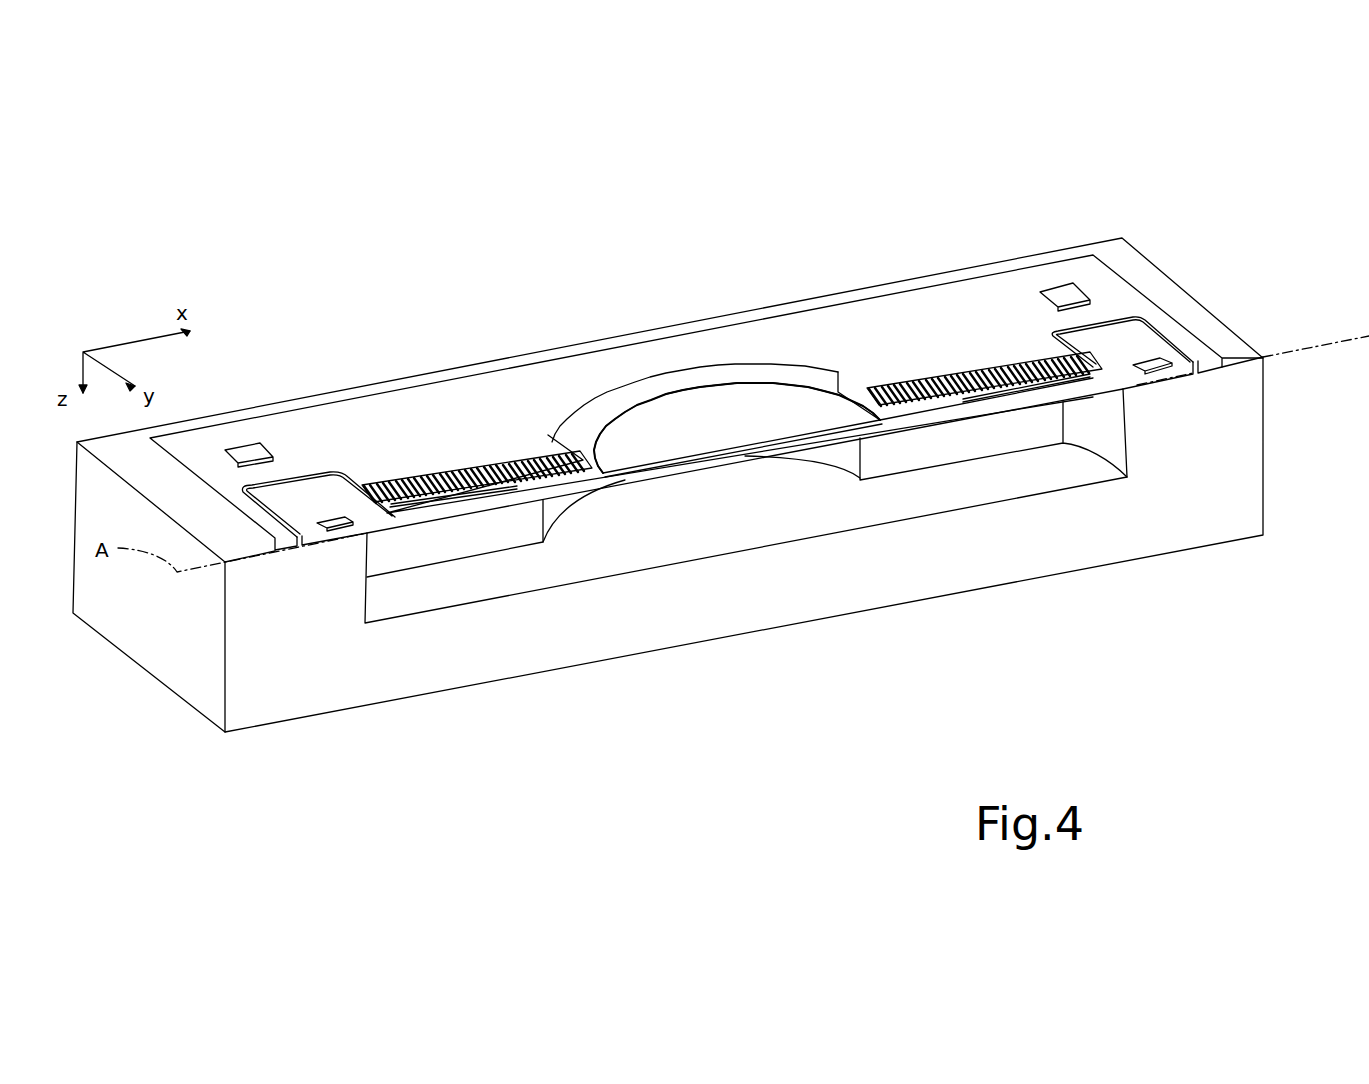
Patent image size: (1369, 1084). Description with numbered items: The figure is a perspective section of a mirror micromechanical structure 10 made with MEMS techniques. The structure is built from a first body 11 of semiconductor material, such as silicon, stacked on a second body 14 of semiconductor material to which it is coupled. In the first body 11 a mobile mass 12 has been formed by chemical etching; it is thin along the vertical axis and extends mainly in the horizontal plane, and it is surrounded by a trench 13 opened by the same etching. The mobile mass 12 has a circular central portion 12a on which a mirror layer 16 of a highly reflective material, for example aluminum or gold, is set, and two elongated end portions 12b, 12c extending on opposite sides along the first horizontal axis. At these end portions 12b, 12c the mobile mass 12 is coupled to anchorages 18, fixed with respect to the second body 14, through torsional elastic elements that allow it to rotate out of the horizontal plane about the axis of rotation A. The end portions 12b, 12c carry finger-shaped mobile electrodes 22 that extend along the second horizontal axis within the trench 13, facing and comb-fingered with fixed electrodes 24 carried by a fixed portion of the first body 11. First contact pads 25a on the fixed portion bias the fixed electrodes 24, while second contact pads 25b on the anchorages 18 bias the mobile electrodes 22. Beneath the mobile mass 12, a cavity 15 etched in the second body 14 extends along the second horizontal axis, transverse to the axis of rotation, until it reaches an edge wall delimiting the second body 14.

The mirror micromechanical structure 10 is at (370, 243).
The first body 11 is at (1097, 290).
The mobile mass 12 is at (672, 387).
The central portion 12a is at (727, 462).
The end portion 12b is at (928, 410).
The end portion 12c is at (538, 472).
The trench 13 is at (598, 406).
The second body 14 is at (1248, 473).
The cavity 15 is at (838, 500).
The mirror layer 16 is at (737, 418).
The anchorage 18 is at (1165, 347).
The mobile electrode 22 is at (521, 456).
The fixed electrode 24 is at (448, 464).
The first contact pad 25a is at (255, 449).
The second contact pad 25b is at (327, 517).